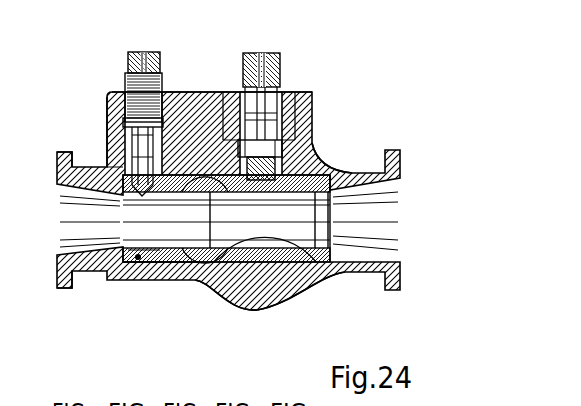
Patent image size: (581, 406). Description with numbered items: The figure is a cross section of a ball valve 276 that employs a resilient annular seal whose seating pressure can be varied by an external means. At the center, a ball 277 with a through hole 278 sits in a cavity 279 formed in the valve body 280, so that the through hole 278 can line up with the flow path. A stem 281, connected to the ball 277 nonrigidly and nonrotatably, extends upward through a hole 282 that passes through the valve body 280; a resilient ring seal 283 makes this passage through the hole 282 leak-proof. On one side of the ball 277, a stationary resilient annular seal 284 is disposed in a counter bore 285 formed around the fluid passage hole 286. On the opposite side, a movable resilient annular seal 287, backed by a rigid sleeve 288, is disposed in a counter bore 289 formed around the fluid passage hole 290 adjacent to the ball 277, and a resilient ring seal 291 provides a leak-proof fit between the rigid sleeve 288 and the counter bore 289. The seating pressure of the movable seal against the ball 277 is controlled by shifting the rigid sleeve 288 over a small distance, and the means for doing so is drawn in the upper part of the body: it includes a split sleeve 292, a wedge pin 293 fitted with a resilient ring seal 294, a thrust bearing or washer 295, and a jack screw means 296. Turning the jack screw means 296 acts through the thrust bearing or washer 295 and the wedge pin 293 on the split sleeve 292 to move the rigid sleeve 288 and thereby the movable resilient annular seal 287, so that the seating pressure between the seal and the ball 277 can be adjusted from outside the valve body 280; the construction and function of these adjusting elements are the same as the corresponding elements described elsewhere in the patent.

The ball valve 276 is at (292, 283).
The ball 277 is at (301, 298).
The through hole 278 is at (243, 250).
The cavity 279 is at (300, 172).
The valve body 280 is at (242, 300).
The stem 281 is at (246, 93).
The hole 282 is at (266, 100).
The resilient ring seal 283 is at (313, 100).
The stationary resilient annular seal 284 is at (354, 170).
The counter bore 285 is at (338, 250).
The fluid passage hole 286 is at (370, 222).
The movable resilient annular seal 287 is at (205, 263).
The rigid sleeve 288 is at (123, 258).
The counter bore 289 is at (196, 93).
The fluid passage hole 290 is at (73, 217).
The resilient ring seal 291 is at (162, 262).
The split sleeve 292 is at (72, 290).
The wedge pin 293 is at (130, 172).
The resilient ring seal 294 is at (133, 160).
The thrust bearing or washer 295 is at (107, 160).
The jack screw means 296 is at (146, 95).